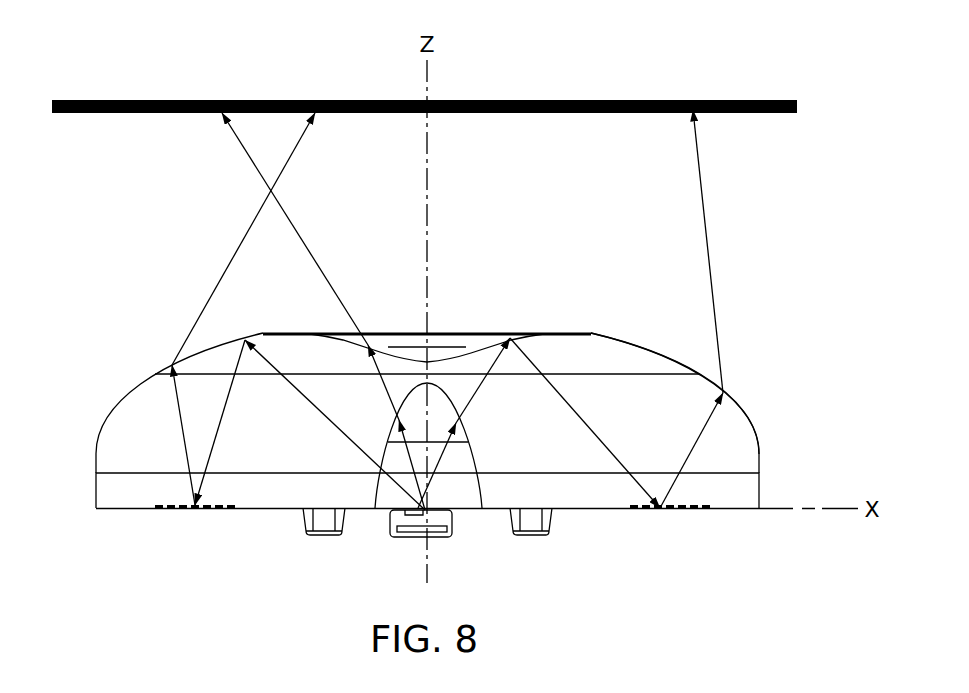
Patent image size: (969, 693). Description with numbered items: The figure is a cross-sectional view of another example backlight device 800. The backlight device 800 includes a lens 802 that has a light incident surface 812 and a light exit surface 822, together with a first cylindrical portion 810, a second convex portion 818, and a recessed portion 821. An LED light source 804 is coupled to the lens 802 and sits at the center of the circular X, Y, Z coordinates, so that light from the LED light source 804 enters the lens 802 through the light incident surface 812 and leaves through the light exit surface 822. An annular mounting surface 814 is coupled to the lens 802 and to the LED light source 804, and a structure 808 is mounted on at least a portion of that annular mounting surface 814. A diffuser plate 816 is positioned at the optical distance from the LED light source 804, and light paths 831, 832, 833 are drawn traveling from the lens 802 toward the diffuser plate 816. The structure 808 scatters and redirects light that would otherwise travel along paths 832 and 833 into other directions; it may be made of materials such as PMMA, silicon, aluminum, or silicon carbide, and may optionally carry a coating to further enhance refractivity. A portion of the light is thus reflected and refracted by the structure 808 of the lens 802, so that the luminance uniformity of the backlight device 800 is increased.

The backlight device 800 is at (617, 47).
The lens 802 is at (148, 405).
The LED light source 804 is at (440, 537).
The structure 808 is at (160, 505).
The first cylindrical portion 810 is at (759, 492).
The light incident surface 812 is at (487, 337).
The annular mounting surface 814 is at (580, 509).
The diffuser plate 816 is at (757, 100).
The second convex portion 818 is at (738, 407).
The recessed portion 821 is at (445, 353).
The light exit surface 822 is at (637, 342).
The path 831 is at (240, 143).
The path 832 is at (298, 142).
The path 833 is at (695, 135).